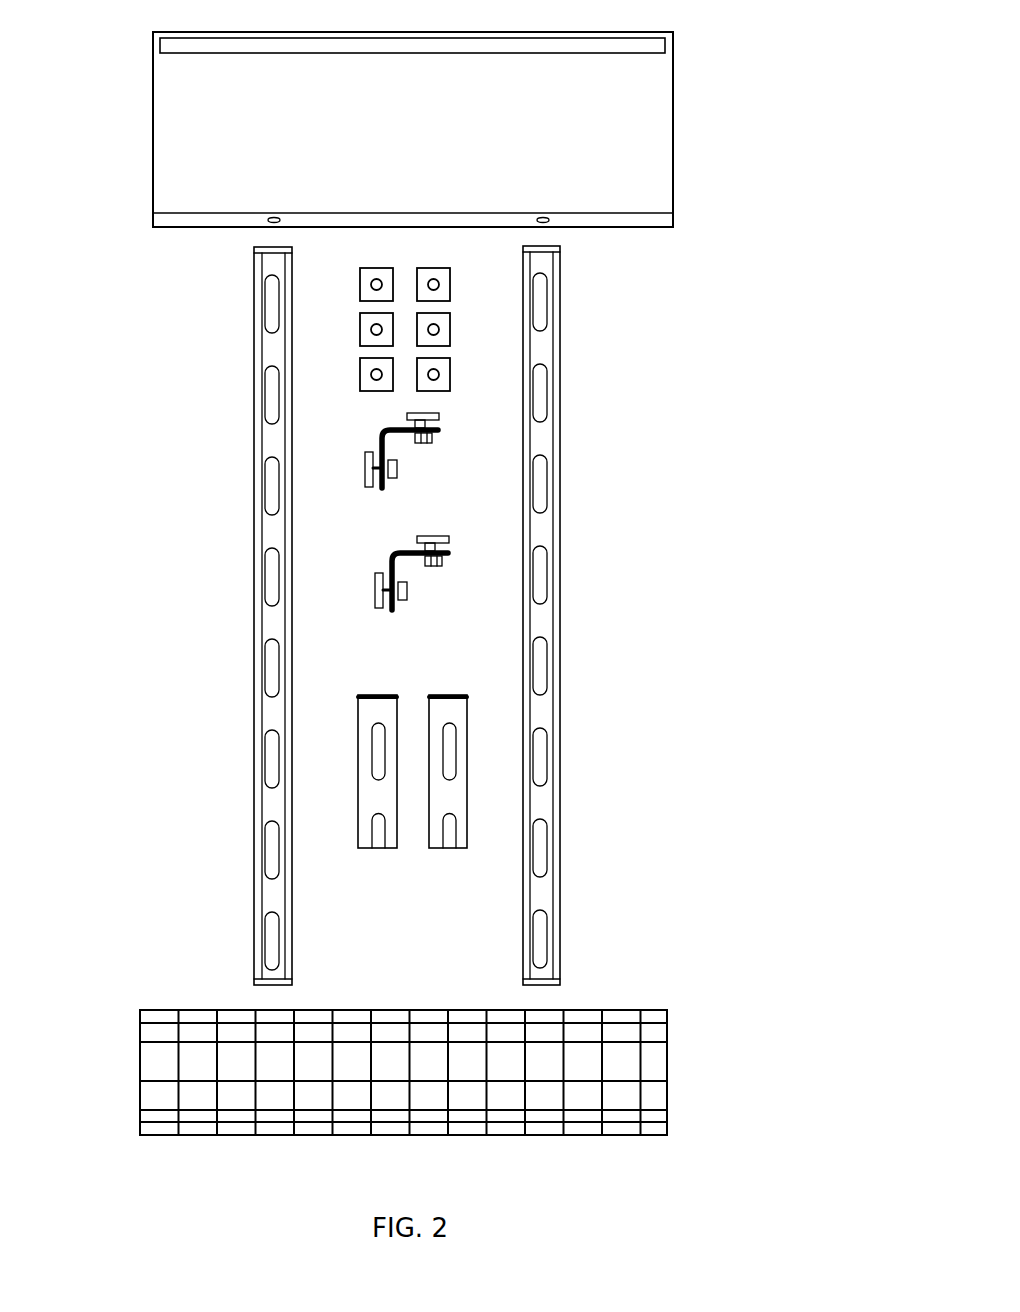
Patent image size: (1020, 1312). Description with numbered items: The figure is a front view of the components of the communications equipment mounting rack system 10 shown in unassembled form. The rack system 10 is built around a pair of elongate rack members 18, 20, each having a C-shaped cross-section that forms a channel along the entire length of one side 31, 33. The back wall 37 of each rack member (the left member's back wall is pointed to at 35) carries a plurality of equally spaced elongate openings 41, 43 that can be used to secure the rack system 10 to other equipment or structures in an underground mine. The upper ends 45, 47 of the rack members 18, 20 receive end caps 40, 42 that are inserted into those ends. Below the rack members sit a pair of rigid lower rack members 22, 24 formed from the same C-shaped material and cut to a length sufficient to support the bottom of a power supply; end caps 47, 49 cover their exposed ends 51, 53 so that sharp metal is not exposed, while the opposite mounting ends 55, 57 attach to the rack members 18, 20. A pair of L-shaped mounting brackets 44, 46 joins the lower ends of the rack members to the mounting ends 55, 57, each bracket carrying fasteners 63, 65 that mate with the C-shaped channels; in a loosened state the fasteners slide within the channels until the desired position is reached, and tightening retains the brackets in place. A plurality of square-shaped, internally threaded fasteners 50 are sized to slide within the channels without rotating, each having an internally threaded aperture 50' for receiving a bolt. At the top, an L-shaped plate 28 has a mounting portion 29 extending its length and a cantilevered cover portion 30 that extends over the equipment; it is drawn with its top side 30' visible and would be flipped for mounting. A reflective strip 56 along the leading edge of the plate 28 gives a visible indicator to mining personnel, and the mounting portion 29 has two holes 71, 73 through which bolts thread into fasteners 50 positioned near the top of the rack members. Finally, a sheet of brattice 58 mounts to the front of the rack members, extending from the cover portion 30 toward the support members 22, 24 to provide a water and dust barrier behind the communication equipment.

The rack system 10 is at (596, 373).
The elongate rack member 18 is at (215, 128).
The elongate rack member 20 is at (558, 607).
The lower rack member 22 is at (362, 818).
The lower rack member 24 is at (460, 787).
The L-shaped plate 28 is at (598, 190).
The mounting portion 29 is at (230, 218).
The cover portion 30 is at (460, 129).
The top side 30' is at (418, 161).
The side 31 is at (255, 595).
The side 33 is at (558, 688).
The rail inner flange 35 is at (268, 435).
The back wall 37 is at (548, 452).
The end cap 40 is at (267, 232).
The elongate openings 41 is at (270, 480).
The end cap 42 is at (552, 253).
The elongate openings 43 is at (548, 500).
The L-shaped mounting bracket 44 is at (440, 430).
The upper end 45 is at (262, 258).
The L-shaped mounting bracket 46 is at (450, 556).
The upper end / end cap 47 is at (545, 254).
The end cap 49 is at (458, 690).
The fastener 50 is at (615, 397).
The internally threaded aperture 50' is at (492, 329).
The exposed end 51 is at (362, 703).
The exposed end 53 is at (468, 700).
The mounting end 55 is at (372, 850).
The reflective strip 56 is at (352, 45).
The mounting end 57 is at (443, 850).
The sheet of brattice 58 is at (620, 1095).
The fasteners 63 is at (407, 415).
The fasteners 65 is at (417, 540).
The hole 71 is at (277, 217).
The hole 73 is at (546, 217).